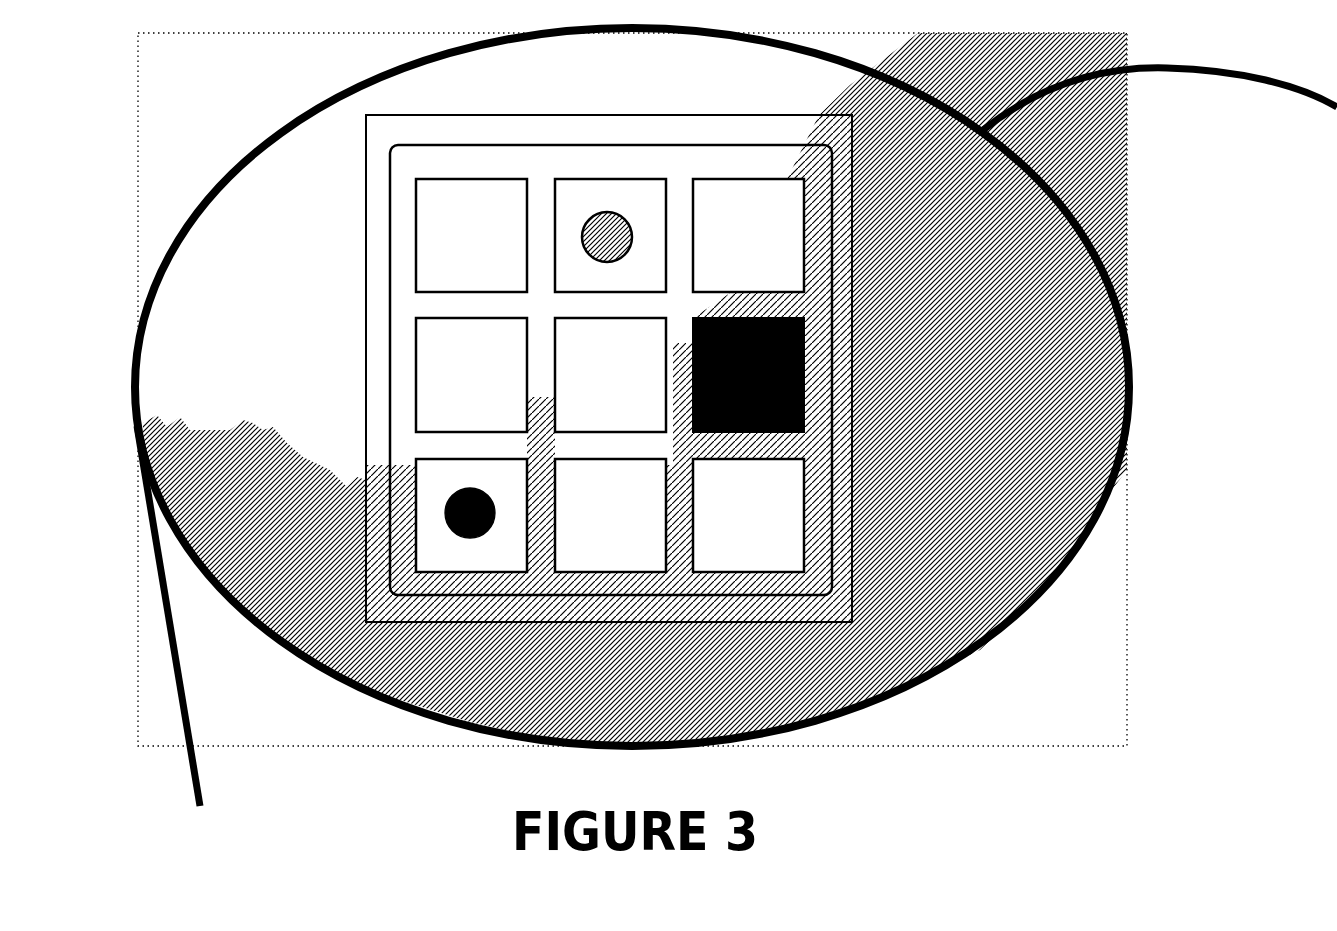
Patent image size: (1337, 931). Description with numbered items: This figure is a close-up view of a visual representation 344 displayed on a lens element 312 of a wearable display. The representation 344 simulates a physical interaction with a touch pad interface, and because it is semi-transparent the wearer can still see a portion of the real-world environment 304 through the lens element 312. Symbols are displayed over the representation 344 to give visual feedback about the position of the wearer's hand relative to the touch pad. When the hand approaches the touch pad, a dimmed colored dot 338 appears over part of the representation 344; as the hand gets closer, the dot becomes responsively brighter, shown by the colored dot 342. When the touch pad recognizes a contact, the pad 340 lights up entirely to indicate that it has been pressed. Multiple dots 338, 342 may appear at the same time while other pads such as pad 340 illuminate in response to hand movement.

The real-world environment 304 is at (1098, 653).
The lens element 312 is at (1116, 478).
The dimmed colored dot 338 is at (600, 228).
The pad 340 is at (748, 375).
The colored dot 342 is at (470, 513).
The visual representation 344 is at (367, 268).